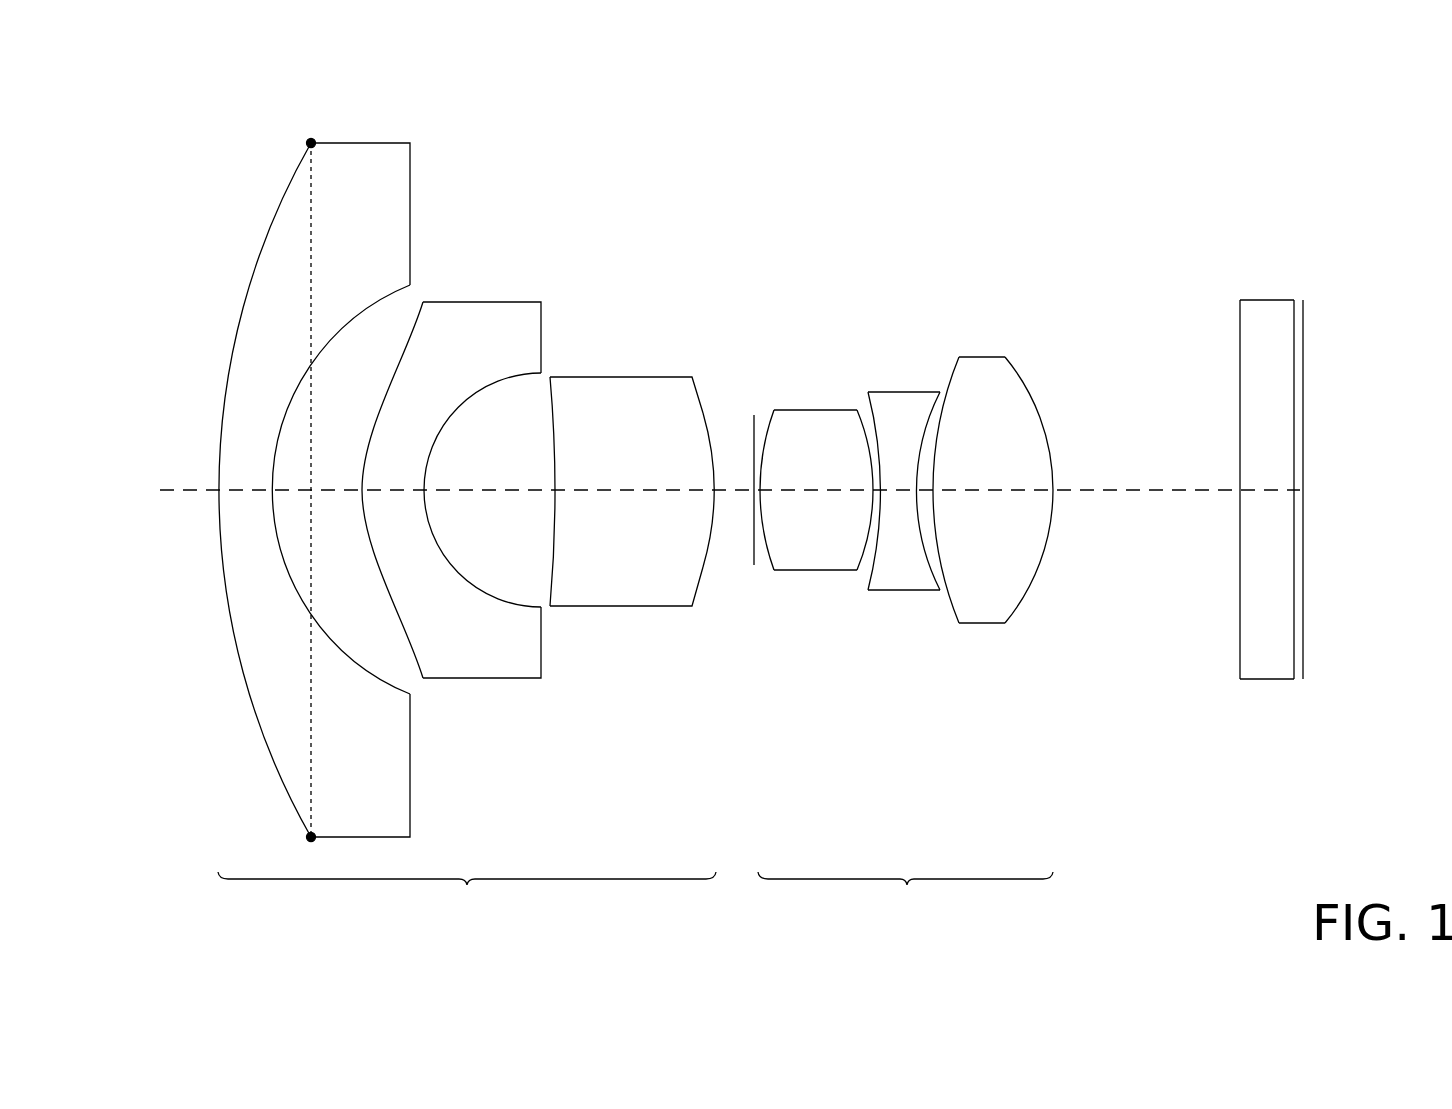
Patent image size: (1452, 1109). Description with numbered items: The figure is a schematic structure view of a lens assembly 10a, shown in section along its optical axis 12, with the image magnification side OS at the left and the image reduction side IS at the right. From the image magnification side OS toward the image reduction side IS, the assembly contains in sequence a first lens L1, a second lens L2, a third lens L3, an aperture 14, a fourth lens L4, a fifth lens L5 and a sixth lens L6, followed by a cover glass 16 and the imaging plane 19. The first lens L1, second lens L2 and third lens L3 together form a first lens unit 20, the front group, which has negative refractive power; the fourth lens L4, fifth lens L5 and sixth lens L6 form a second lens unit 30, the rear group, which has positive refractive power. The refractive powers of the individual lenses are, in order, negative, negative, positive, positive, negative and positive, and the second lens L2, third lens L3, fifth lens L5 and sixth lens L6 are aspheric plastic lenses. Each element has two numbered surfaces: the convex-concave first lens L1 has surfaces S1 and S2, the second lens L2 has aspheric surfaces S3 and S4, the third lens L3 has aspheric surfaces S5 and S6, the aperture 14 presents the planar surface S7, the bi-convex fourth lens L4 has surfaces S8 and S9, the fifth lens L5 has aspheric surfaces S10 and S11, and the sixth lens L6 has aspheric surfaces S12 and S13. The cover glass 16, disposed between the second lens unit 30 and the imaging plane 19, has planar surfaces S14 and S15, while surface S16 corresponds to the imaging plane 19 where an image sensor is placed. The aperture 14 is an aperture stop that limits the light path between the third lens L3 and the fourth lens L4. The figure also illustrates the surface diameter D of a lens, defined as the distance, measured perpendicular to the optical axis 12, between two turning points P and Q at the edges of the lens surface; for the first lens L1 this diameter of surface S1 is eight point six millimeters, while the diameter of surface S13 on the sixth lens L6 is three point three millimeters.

The lens assembly 10a is at (83, 87).
The image magnification side OS is at (137, 143).
The image reduction side IS is at (1428, 143).
The optical axis 12 is at (183, 490).
The aperture 14 is at (732, 536).
The cover glass 16 is at (1283, 522).
The imaging plane 19 is at (1357, 518).
The first lens unit 20 is at (467, 504).
The second lens unit 30 is at (913, 599).
The first lens L1 is at (300, 474).
The second lens L2 is at (447, 457).
The third lens L3 is at (618, 461).
The fourth lens L4 is at (805, 440).
The fifth lens L5 is at (890, 491).
The sixth lens L6 is at (999, 451).
The object-side surface of first lens S1 is at (264, 235).
The image-side surface of first lens S2 is at (275, 458).
The object-side surface of second lens S3 is at (384, 397).
The image-side surface of second lens S4 is at (458, 557).
The object-side surface of third lens S5 is at (554, 468).
The image-side surface of third lens S6 is at (704, 412).
The aperture surface S7 is at (753, 528).
The object-side surface of fourth lens S8 is at (770, 423).
The image-side surface of fourth lens S9 is at (868, 430).
The object-side surface of fifth lens S10 is at (873, 550).
The image-side surface of fifth lens S11 is at (933, 563).
The object-side surface of sixth lens S12 is at (950, 390).
The image-side surface of sixth lens S13 is at (1041, 408).
The object-side surface of cover glass S14 is at (1239, 599).
The image-side surface of cover glass S15 is at (1296, 608).
The imaging plane surface S16 is at (1307, 577).
The turning point P is at (311, 143).
The turning point Q is at (311, 837).
The surface diameter D is at (311, 275).